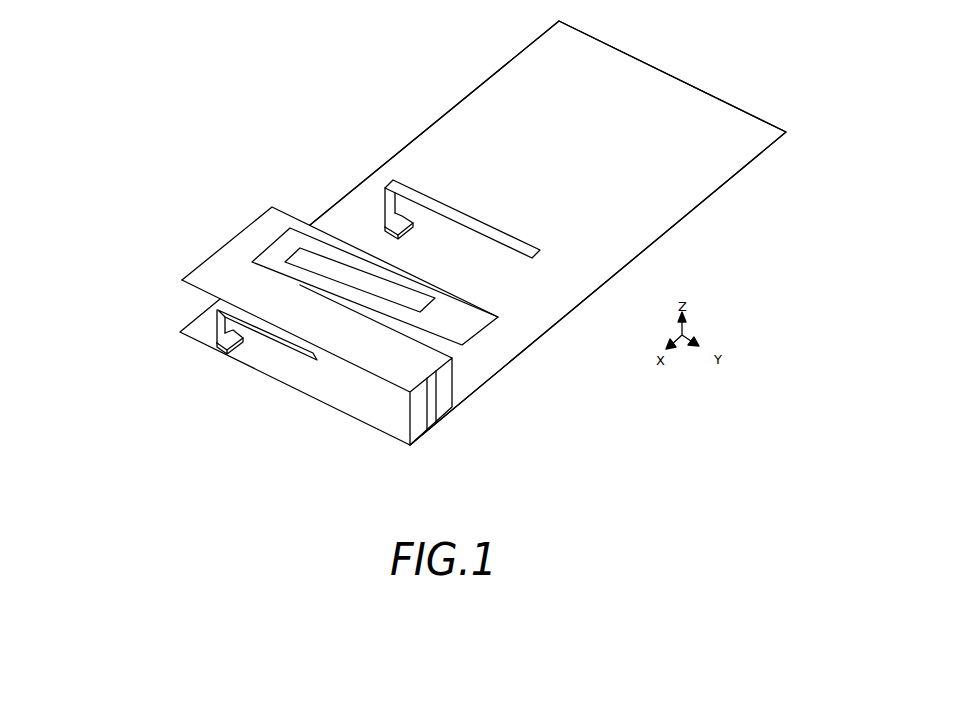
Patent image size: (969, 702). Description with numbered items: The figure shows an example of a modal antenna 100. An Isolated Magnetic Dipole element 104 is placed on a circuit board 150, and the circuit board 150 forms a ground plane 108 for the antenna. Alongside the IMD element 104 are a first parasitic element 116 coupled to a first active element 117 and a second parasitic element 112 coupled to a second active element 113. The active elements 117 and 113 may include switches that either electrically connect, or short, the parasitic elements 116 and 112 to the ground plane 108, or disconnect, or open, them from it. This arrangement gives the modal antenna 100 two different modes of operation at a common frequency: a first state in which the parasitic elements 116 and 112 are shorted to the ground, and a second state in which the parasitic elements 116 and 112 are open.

The modal antenna 100 is at (204, 24).
The Isolated Magnetic Dipole element 104 is at (223, 280).
The ground plane 108 is at (653, 189).
The second parasitic element 112 is at (433, 199).
The second active element 113 is at (380, 214).
The first parasitic element 116 is at (278, 343).
The first active element 117 is at (215, 346).
The circuit board 150 is at (612, 130).